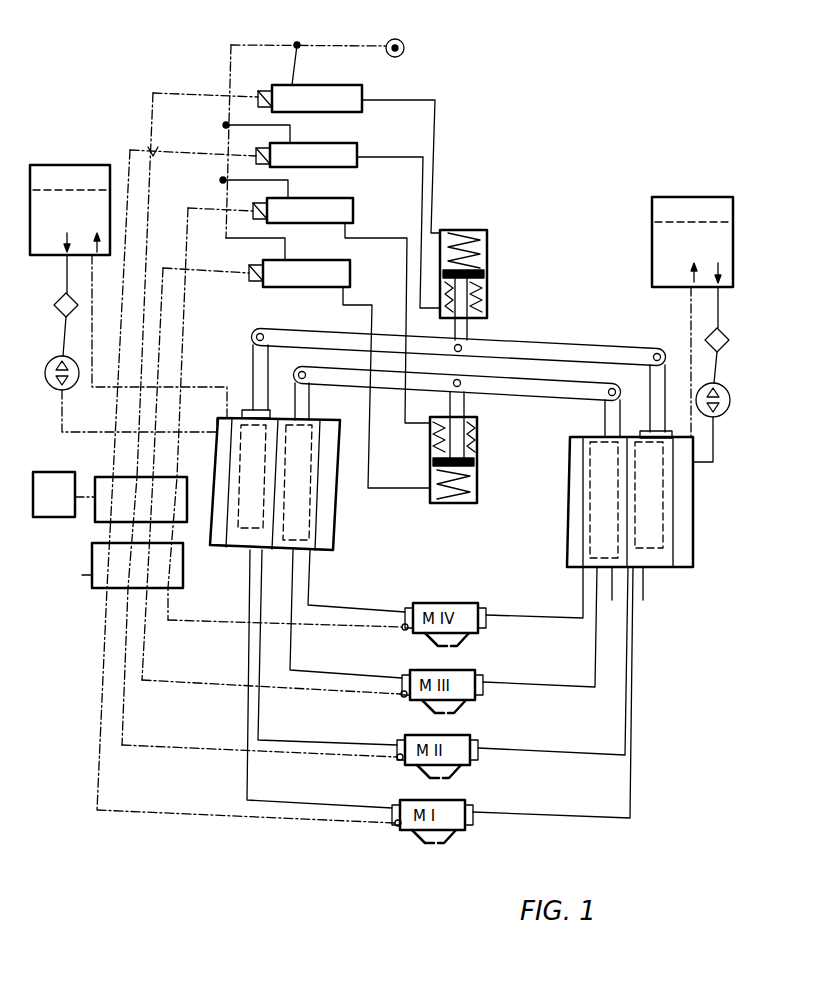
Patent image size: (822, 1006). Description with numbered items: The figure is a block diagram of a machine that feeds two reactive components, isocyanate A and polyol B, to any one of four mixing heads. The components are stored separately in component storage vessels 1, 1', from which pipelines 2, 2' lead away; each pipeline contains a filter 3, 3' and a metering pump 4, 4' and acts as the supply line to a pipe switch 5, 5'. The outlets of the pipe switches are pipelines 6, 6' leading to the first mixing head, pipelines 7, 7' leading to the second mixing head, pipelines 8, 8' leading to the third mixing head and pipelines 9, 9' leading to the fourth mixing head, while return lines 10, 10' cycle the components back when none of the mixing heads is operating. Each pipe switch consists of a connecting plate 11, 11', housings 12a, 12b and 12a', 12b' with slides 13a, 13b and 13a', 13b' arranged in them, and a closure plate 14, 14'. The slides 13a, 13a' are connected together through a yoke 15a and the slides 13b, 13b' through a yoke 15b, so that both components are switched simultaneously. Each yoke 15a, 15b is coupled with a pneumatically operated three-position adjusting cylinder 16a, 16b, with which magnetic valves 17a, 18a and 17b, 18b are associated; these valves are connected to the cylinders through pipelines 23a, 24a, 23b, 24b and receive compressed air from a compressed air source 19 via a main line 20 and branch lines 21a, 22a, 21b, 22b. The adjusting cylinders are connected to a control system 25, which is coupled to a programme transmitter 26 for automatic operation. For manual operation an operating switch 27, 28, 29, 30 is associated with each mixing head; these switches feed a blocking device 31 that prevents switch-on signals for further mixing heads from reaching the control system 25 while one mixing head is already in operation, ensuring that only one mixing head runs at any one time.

The component storage vessel 1 is at (692, 226).
The component storage vessel 1' is at (70, 193).
The pipeline 2 is at (732, 307).
The pipeline 2' is at (48, 274).
The filter 3 is at (725, 352).
The filter 3' is at (54, 317).
The metering pump 4 is at (713, 407).
The metering pump 4' is at (121, 374).
The pipe switch 5 is at (616, 523).
The pipe switch 5' is at (288, 513).
The pipeline 6 is at (553, 692).
The pipeline 6' is at (319, 679).
The pipeline 7 is at (553, 661).
The pipeline 7' is at (327, 647).
The pipeline 8 is at (540, 627).
The pipeline 8' is at (346, 614).
The pipeline 9 is at (534, 592).
The pipeline 9' is at (356, 581).
The return line 10 is at (674, 362).
The return line 10' is at (147, 336).
The connecting plate 11 is at (644, 569).
The connecting plate 11' is at (264, 566).
The housing 12a is at (663, 526).
The housing 12a' is at (235, 517).
The housing 12b is at (610, 526).
The housing 12b' is at (291, 508).
The slide 13a is at (652, 380).
The slide 13a' is at (233, 374).
The slide 13b is at (577, 418).
The slide 13b' is at (325, 401).
The closure plate 14 is at (606, 502).
The closure plate 14' is at (295, 484).
The yoke 15a is at (555, 345).
The yoke 15b is at (483, 385).
The adjusting cylinder 16a is at (487, 250).
The adjusting cylinder 16b is at (478, 445).
The magnetic valve 17a is at (350, 277).
The magnetic valve 17b is at (360, 168).
The magnetic valve 18a is at (353, 212).
The magnetic valve 18b is at (365, 97).
The compressed air source 19 is at (416, 34).
The main line 20 is at (258, 45).
The branch line 21a is at (287, 251).
The branch line 21b is at (293, 136).
The branch line 22a is at (290, 190).
The branch line 22b is at (300, 67).
The pipeline 23a is at (350, 308).
The pipeline 23b is at (390, 157).
The pipeline 24a is at (350, 238).
The pipeline 24b is at (437, 140).
The control system 25 is at (100, 482).
The programme transmitter 26 is at (64, 510).
The operating switch 27 is at (395, 828).
The operating switch 28 is at (398, 762).
The operating switch 29 is at (402, 700).
The operating switch 30 is at (404, 632).
The blocking device 31 is at (114, 565).